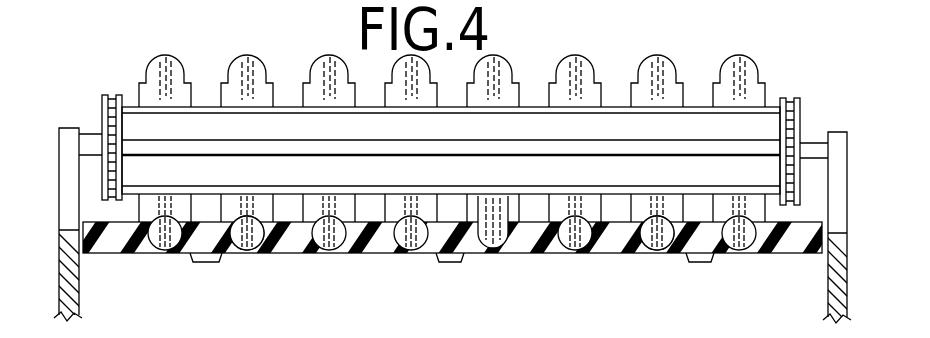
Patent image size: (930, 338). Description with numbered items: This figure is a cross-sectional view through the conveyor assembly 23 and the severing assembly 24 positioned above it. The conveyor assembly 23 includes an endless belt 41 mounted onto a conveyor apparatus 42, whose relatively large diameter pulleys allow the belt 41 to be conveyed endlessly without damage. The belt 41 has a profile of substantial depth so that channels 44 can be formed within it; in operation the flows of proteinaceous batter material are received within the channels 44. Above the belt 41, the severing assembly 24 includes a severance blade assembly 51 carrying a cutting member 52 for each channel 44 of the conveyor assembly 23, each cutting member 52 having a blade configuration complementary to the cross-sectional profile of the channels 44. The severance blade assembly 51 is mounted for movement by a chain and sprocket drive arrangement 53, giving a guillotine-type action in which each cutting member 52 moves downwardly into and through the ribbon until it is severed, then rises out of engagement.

The conveyor assembly 23 is at (151, 257).
The severing assembly 24 is at (466, 160).
The endless belt 41 is at (532, 248).
The conveyor apparatus 42 is at (830, 293).
The channel 44 is at (254, 241).
The severance blade assembly 51 is at (613, 107).
The cutting member 52 is at (313, 66).
The chain and sprocket drive arrangement 53 is at (800, 123).